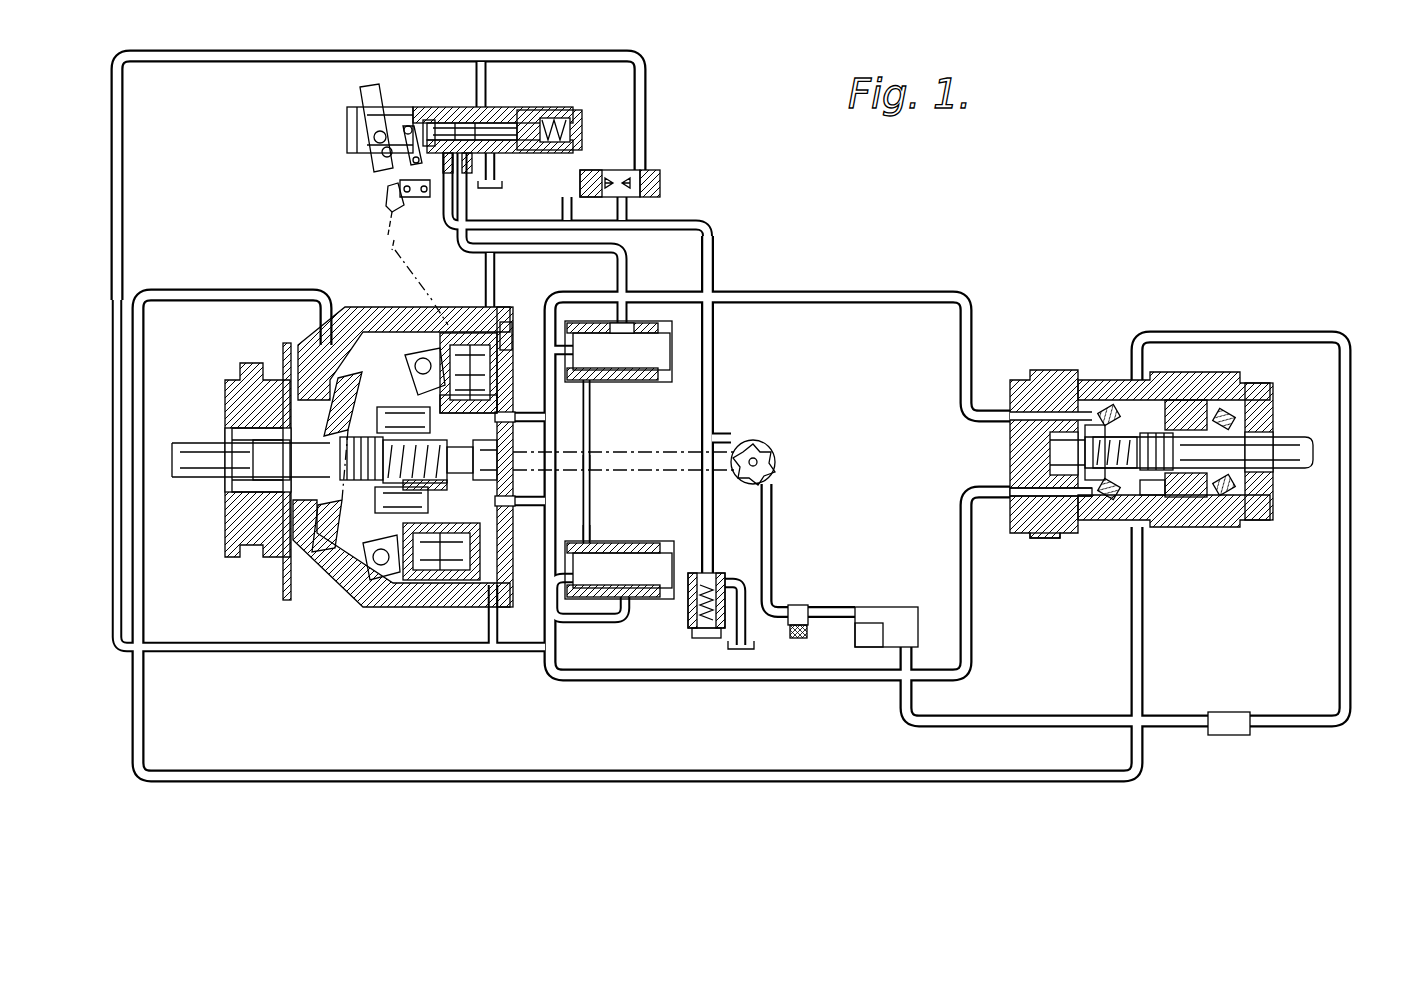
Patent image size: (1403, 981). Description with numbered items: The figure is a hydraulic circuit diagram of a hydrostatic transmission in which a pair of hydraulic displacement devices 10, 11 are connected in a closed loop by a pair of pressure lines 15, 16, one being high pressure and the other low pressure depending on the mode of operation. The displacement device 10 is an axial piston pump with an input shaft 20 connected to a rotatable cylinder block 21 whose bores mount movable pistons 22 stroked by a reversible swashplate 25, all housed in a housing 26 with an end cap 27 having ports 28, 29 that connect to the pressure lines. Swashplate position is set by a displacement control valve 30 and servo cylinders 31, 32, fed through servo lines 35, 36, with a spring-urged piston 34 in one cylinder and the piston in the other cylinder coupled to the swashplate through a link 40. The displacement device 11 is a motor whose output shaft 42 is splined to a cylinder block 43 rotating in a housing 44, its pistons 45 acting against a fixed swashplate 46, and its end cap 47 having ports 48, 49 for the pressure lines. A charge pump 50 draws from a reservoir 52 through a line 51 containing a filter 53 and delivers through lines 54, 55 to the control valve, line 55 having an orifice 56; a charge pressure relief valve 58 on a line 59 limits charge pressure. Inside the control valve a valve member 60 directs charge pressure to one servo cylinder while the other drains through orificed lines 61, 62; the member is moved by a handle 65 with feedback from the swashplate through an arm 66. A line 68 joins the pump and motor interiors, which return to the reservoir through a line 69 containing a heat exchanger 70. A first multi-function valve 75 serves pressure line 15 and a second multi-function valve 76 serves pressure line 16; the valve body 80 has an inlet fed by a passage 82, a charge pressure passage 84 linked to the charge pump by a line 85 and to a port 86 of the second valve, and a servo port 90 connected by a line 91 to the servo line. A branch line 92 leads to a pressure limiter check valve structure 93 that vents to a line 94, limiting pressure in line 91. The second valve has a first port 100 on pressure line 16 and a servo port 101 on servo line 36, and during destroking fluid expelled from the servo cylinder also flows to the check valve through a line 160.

The hydraulic displacement device 10 is at (356, 460).
The hydraulic displacement device 11 is at (1155, 454).
The pressure line 15 is at (835, 296).
The pressure line 16 is at (775, 678).
The input shaft 20 is at (182, 480).
The cylinder block 21 is at (468, 403).
The piston 22 is at (358, 487).
The swashplate 25 is at (345, 375).
The housing 26 is at (300, 352).
The end cap 27 is at (519, 278).
The port 28 is at (505, 412).
The port 29 is at (502, 503).
The displacement control valve 30 is at (505, 110).
The servo cylinder 31 is at (470, 335).
The servo cylinder 32 is at (425, 590).
The piston 34 is at (512, 340).
The servo line 35 is at (455, 226).
The servo line 36 is at (340, 649).
The link 40 is at (348, 560).
The output shaft 42 is at (1278, 440).
The cylinder block 43 is at (1092, 513).
The housing 44 is at (1178, 525).
The piston 45 is at (1148, 503).
The fixed swashplate 46 is at (1185, 405).
The end cap 47 is at (1035, 540).
The port 48 is at (1015, 412).
The port 49 is at (1010, 497).
The charge pump 50 is at (775, 452).
The line 51 is at (775, 559).
The reservoir 52 is at (890, 605).
The filter 53 is at (800, 607).
The line 54 is at (735, 440).
The line 55 is at (716, 355).
The orifice 56 is at (513, 221).
The charge pressure relief valve 58 is at (690, 625).
The line 59 is at (713, 520).
The valve member 60 is at (430, 130).
The line 61 is at (430, 188).
The line 62 is at (505, 165).
The handle 65 is at (360, 97).
The arm 66 is at (388, 201).
The line 68 is at (655, 781).
The line 69 is at (1351, 580).
The heat exchanger 70 is at (1240, 712).
The first multi-function valve 75 is at (703, 299).
The second multi-function valve 76 is at (643, 544).
The valve body 80 is at (635, 385).
The passage 82 is at (557, 402).
The charge pressure passage 84 is at (592, 416).
The line 85 is at (596, 504).
The port 86 is at (594, 542).
The servo port 90 is at (618, 327).
The line 91 is at (630, 270).
The branch line 92 is at (576, 200).
The pressure limiter check valve structure 93 is at (660, 180).
The line 94 is at (640, 212).
The first port 100 is at (565, 590).
The servo port 101 is at (630, 595).
The line 160 is at (652, 92).